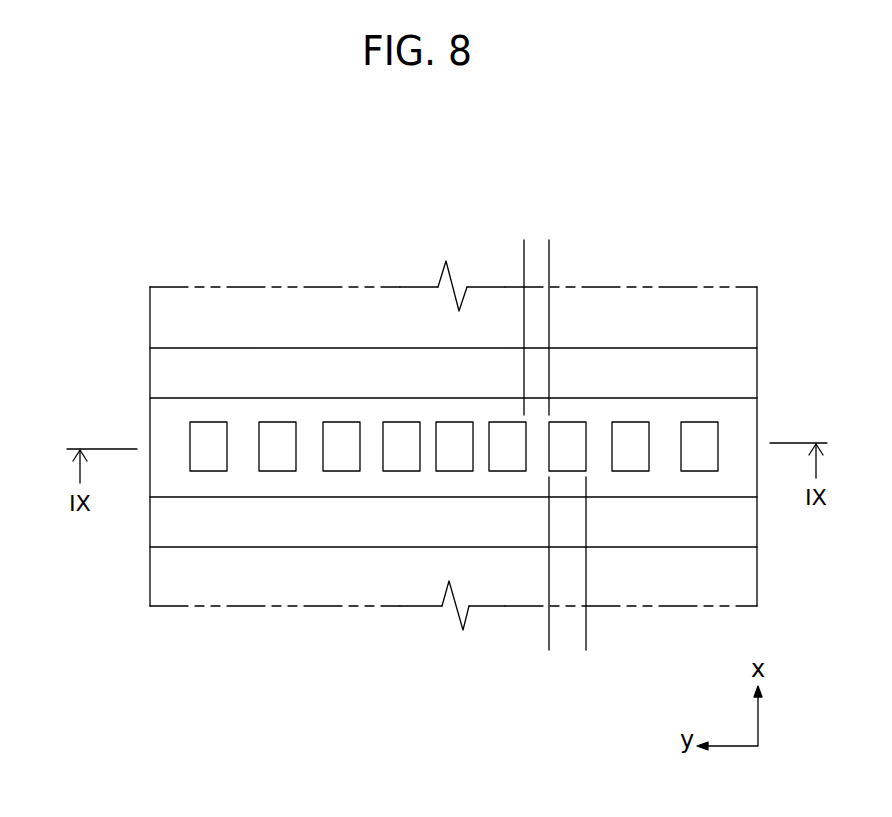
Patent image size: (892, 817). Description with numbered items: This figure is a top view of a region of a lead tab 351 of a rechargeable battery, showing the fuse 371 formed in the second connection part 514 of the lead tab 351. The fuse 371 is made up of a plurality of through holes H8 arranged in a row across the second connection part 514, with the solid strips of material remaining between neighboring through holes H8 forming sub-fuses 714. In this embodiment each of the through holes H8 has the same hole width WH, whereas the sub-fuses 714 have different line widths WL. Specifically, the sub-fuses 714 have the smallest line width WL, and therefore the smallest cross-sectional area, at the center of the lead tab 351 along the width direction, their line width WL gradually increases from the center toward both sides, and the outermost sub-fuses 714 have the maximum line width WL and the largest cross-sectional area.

The sub-fuse 714 is at (369, 440).
The second connection part 514 is at (453, 423).
The lead tab 351 is at (646, 313).
The fuse 371 is at (395, 350).
The through hole H8 is at (280, 450).
The line width WL is at (508, 243).
The hole width WH is at (551, 644).